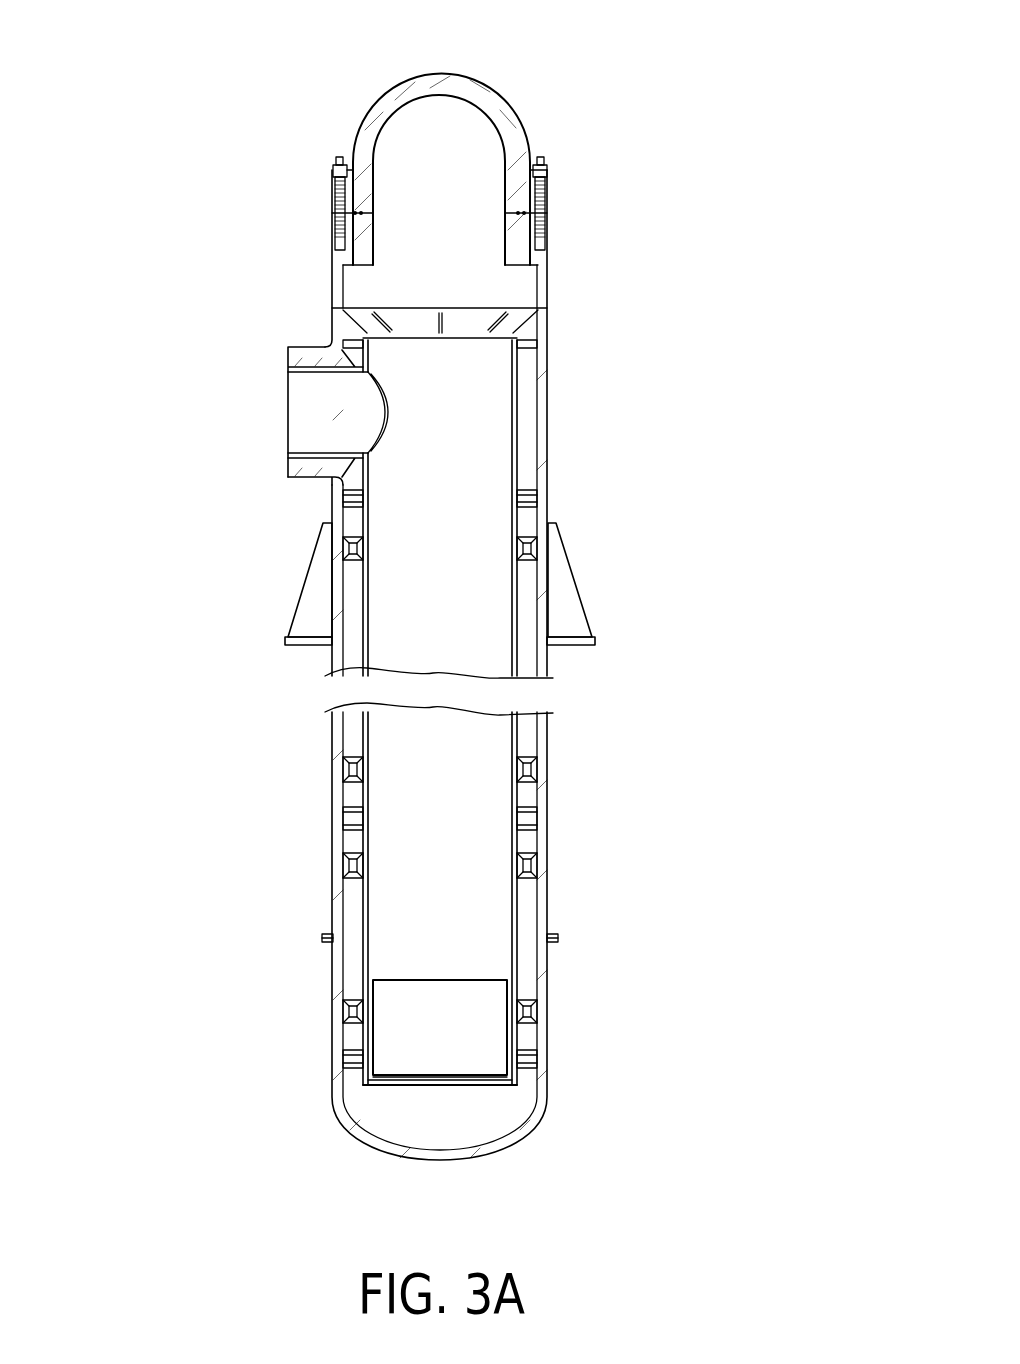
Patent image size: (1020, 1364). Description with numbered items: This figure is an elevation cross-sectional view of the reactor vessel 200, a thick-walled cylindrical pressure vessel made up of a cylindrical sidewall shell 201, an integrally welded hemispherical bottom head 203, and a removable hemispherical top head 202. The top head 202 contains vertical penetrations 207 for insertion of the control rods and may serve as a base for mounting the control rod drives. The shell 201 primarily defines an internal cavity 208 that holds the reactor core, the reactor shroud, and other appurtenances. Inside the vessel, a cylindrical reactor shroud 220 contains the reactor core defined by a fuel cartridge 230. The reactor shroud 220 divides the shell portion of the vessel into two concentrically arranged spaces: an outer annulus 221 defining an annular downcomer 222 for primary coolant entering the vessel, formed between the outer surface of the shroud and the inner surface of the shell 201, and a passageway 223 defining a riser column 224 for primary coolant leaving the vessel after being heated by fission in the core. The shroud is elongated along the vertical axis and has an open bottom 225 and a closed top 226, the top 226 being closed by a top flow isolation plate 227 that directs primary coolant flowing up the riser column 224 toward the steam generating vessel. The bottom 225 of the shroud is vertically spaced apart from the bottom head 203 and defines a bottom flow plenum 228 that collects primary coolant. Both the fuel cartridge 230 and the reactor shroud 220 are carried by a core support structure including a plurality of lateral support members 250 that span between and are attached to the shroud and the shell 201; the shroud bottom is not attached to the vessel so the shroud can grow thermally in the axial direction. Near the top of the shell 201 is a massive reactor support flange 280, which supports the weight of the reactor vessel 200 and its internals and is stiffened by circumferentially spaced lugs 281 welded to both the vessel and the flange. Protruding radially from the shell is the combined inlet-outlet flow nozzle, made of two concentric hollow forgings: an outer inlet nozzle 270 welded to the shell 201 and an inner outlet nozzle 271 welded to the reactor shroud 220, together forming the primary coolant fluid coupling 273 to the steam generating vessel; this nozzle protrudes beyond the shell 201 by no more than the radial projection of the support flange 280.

The reactor vessel 200 is at (240, 108).
The cylindrical sidewall shell 201 is at (540, 422).
The removable hemispherical top head 202 is at (570, 142).
The hemispherical bottom head 203 is at (485, 1162).
The vertical penetrations 207 is at (368, 103).
The internal cavity 208 is at (370, 1105).
The reactor shroud 220 is at (517, 925).
The outer annulus 221 is at (527, 729).
The annular downcomer 222 is at (527, 973).
The passageway 223 is at (420, 908).
The riser column 224 is at (385, 885).
The open bottom 225 is at (418, 1090).
The closed top 226 is at (408, 343).
The top flow isolation plate 227 is at (477, 340).
The bottom flow plenum 228 is at (505, 1108).
The fuel cartridge 230 is at (440, 1023).
The lateral support members 250 is at (542, 865).
The outer inlet nozzle 270 is at (290, 482).
The inner outlet nozzle 271 is at (287, 447).
The primary coolant fluid coupling 273 is at (272, 337).
The reactor support flange 280 is at (595, 642).
The lugs 281 is at (572, 588).